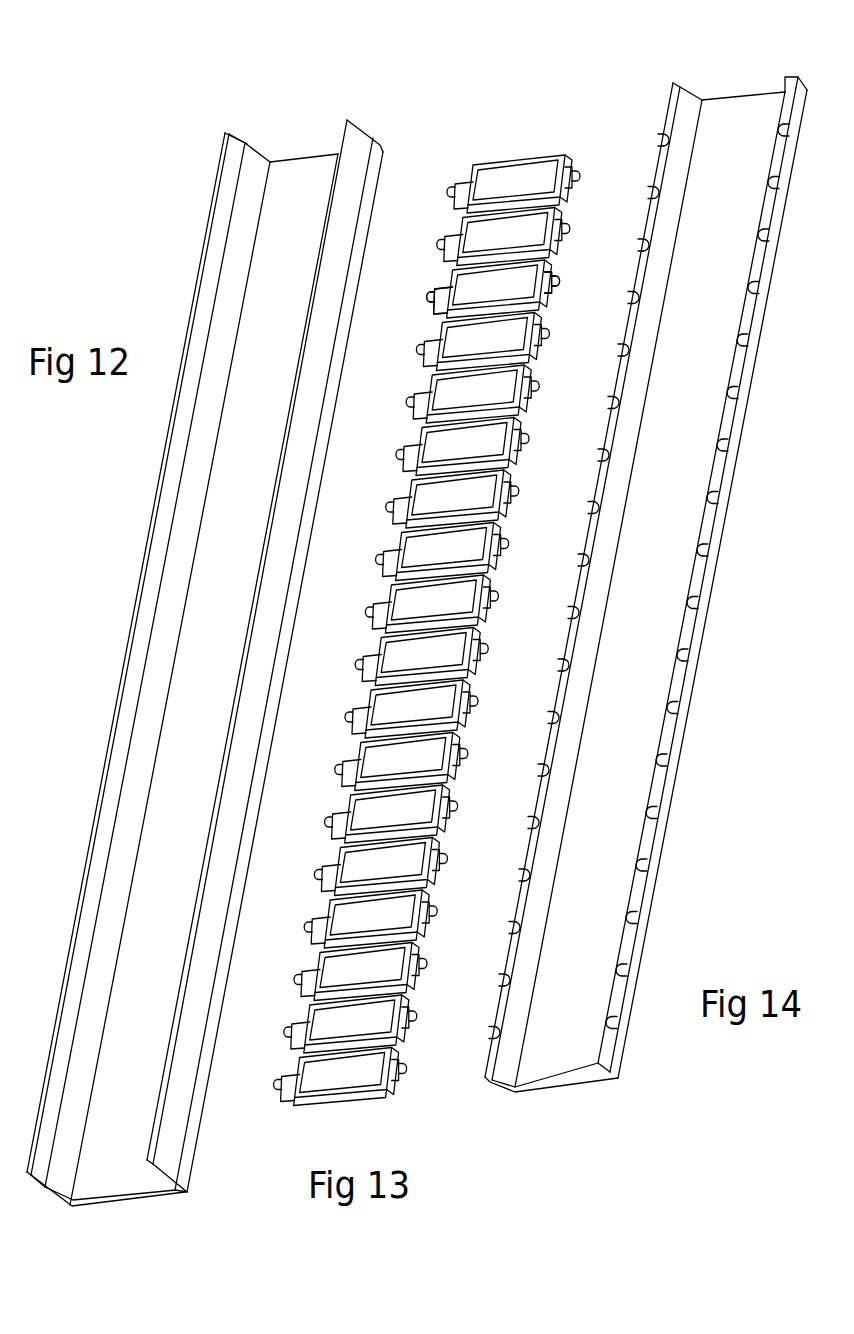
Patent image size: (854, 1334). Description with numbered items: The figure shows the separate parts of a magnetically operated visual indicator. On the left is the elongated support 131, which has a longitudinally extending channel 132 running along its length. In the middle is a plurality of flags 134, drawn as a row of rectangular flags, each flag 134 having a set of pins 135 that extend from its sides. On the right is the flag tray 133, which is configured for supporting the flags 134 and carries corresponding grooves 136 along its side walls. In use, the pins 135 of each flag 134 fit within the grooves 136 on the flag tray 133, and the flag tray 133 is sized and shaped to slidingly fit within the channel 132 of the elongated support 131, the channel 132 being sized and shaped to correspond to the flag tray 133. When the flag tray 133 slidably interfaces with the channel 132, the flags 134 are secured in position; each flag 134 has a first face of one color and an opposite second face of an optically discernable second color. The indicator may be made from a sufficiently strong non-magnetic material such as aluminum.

In FIG. 12, the elongated support 131 is at (362, 145).
In FIG. 12, the channel 132 is at (310, 177).
In FIG. 14, the flag tray 133 is at (800, 82).
In FIG. 13, the flag 134 is at (495, 233).
In FIG. 13, the pins 135 is at (433, 293).
In FIG. 14, the grooves 136 is at (788, 131).